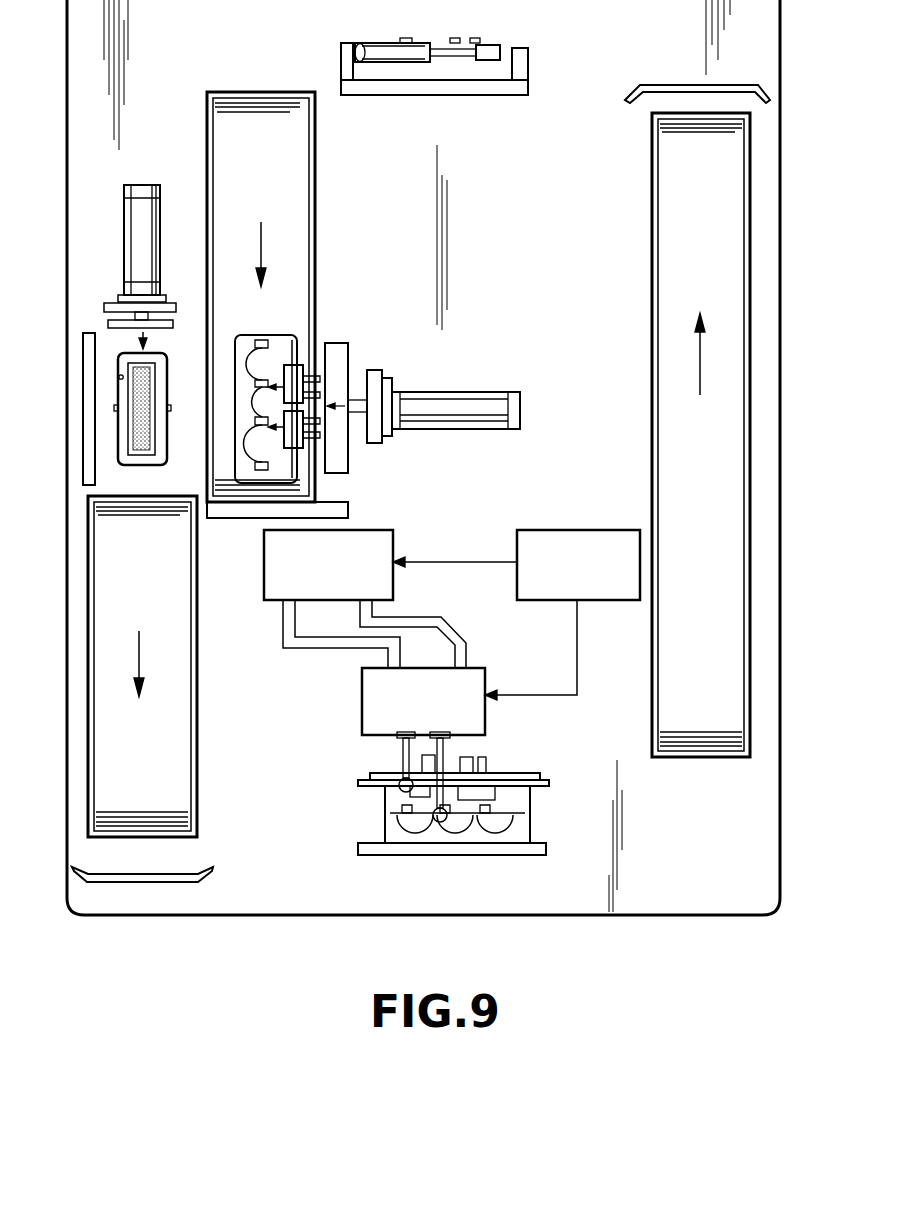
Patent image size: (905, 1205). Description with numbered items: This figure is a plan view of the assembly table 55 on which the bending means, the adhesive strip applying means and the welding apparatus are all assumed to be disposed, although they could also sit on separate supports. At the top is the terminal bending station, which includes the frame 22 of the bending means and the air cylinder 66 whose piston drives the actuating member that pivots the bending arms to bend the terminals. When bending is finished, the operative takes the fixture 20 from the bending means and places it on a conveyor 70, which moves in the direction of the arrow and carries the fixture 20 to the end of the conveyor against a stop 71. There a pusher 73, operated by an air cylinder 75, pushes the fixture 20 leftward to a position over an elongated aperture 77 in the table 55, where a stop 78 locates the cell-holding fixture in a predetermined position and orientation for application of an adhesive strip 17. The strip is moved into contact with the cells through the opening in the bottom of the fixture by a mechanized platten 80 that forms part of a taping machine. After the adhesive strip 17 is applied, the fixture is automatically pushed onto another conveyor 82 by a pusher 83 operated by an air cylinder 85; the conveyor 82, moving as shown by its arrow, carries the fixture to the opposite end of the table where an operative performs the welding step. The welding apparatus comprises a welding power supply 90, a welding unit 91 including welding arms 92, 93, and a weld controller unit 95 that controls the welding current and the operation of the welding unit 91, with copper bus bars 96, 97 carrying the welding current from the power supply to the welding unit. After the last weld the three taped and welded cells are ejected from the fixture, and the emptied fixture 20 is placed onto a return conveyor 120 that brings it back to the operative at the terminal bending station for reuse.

The adhesive strip 17 is at (136, 427).
The fixture 20 is at (282, 336).
The frame 22 is at (521, 70).
The table 55 is at (500, 480).
The air cylinder 66 is at (395, 48).
The conveyor 70 is at (290, 160).
The stop 71 is at (345, 510).
The pusher 73 is at (340, 358).
The air cylinder 75 is at (470, 400).
The elongated aperture 77 is at (118, 377).
The stop 78 is at (88, 402).
The mechanized platten 80 is at (125, 455).
The conveyor 82 is at (108, 586).
The pusher 83 is at (120, 322).
The air cylinder 85 is at (134, 235).
The welding power supply 90 is at (264, 555).
The welding unit 91 is at (362, 712).
The welding arm 92 is at (403, 750).
The welding arm 93 is at (445, 752).
The weld controller unit 95 is at (626, 526).
The copper bus bar 96 is at (437, 631).
The copper bus bar 97 is at (340, 651).
The return conveyor 120 is at (725, 440).